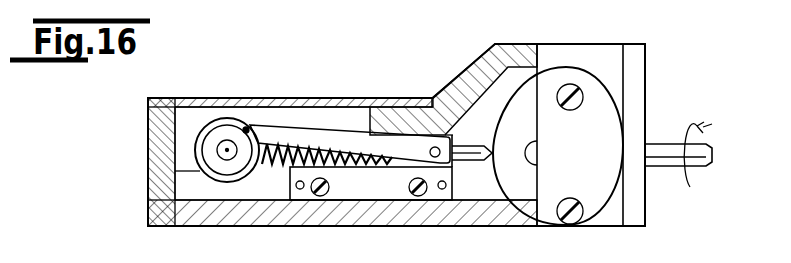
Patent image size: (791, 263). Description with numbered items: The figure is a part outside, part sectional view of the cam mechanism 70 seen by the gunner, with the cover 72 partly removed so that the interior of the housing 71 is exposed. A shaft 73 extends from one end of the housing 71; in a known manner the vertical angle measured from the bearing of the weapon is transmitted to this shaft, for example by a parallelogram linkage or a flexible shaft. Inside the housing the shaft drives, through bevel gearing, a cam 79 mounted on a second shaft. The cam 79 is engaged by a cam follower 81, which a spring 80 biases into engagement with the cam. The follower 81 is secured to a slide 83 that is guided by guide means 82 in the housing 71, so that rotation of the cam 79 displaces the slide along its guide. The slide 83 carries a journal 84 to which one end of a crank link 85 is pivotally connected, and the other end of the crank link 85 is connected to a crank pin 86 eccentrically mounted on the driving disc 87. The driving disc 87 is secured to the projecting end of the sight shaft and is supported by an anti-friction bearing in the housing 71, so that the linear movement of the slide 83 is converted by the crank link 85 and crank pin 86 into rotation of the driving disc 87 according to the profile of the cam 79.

The cam mechanism 70 is at (464, 50).
The housing 71 is at (510, 52).
The cover 72 is at (603, 58).
The shaft 73 is at (662, 152).
The cam 79 is at (527, 131).
The spring 80 is at (277, 170).
The cam follower 81 is at (483, 163).
The guide means 82 is at (412, 130).
The slide 83 is at (452, 138).
The journal 84 is at (437, 165).
The crank link 85 is at (310, 138).
The crank pin 86 is at (250, 127).
The driving disc 87 is at (218, 138).